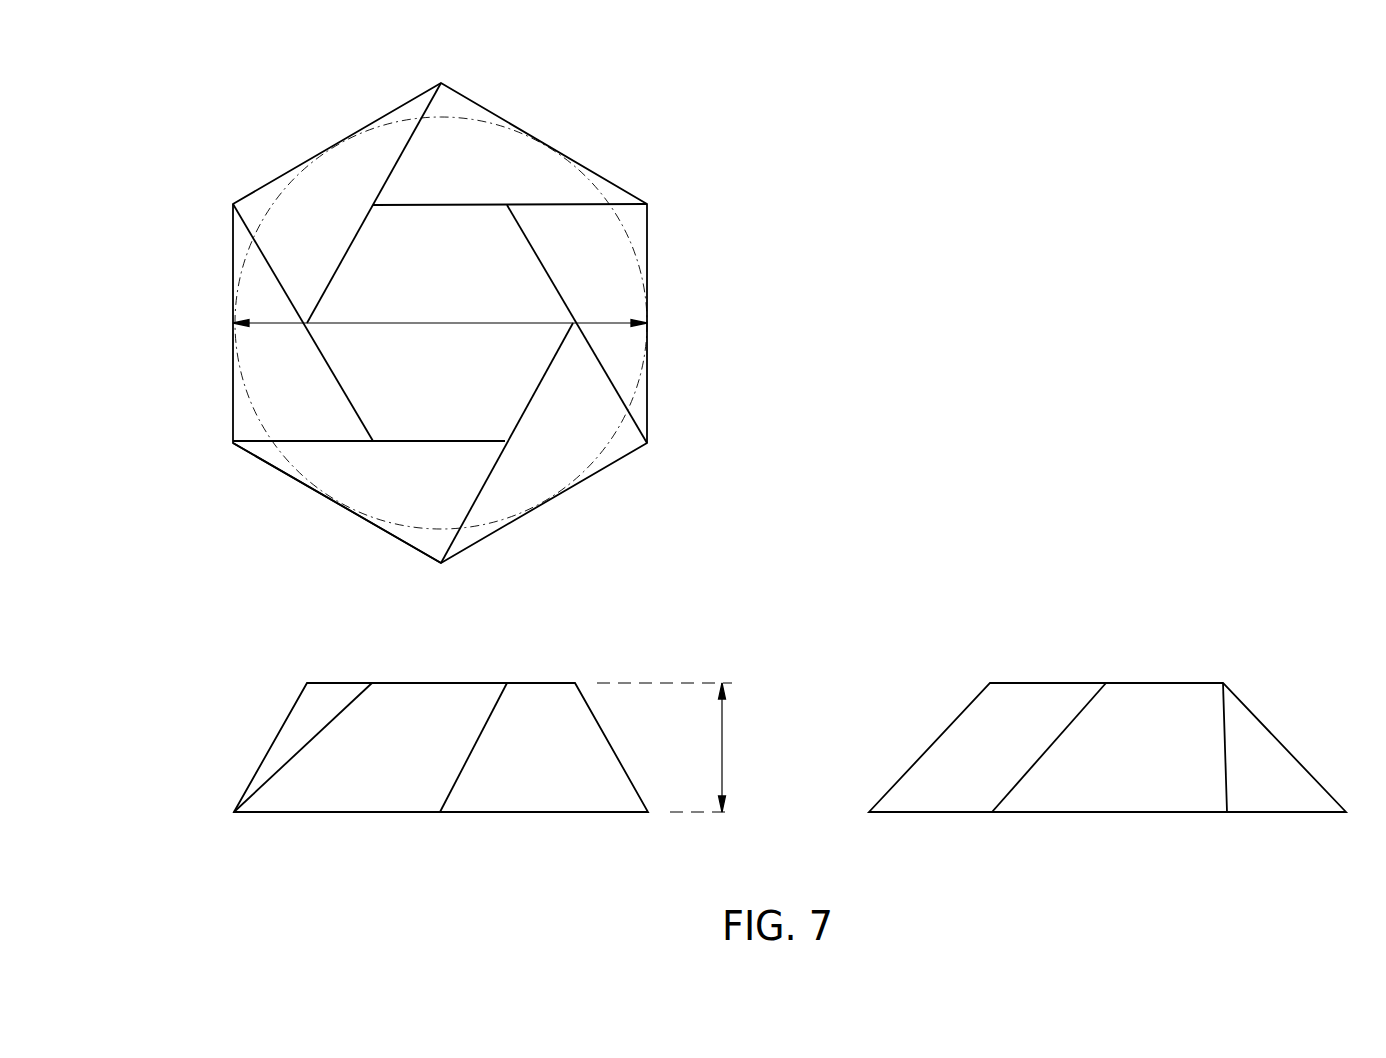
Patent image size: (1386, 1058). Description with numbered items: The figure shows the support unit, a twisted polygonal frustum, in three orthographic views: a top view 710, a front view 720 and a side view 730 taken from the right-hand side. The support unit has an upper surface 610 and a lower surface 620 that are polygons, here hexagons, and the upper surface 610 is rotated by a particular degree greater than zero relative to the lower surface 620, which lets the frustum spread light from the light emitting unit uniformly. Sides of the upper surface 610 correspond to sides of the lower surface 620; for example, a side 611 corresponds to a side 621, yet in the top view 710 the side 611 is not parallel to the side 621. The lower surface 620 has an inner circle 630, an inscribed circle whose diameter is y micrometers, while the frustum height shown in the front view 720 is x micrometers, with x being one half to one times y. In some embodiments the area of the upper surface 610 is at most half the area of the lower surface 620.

The top view 710 is at (382, 325).
The front view 720 is at (222, 739).
The side view 730 is at (1305, 638).
The upper surface 610 is at (466, 225).
The side 611 is at (403, 440).
The lower surface 620 is at (332, 813).
The side 621 is at (397, 538).
The inner circle 630 is at (278, 195).